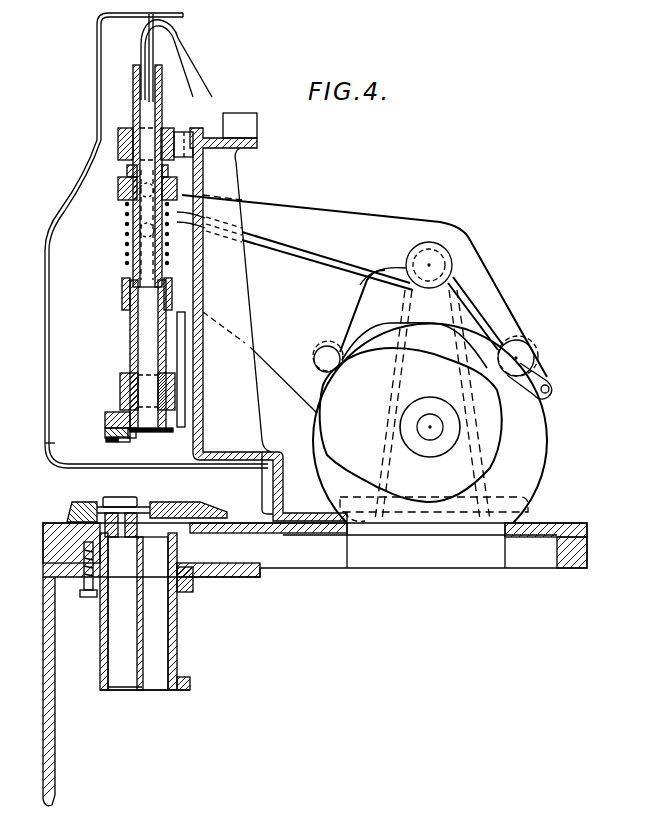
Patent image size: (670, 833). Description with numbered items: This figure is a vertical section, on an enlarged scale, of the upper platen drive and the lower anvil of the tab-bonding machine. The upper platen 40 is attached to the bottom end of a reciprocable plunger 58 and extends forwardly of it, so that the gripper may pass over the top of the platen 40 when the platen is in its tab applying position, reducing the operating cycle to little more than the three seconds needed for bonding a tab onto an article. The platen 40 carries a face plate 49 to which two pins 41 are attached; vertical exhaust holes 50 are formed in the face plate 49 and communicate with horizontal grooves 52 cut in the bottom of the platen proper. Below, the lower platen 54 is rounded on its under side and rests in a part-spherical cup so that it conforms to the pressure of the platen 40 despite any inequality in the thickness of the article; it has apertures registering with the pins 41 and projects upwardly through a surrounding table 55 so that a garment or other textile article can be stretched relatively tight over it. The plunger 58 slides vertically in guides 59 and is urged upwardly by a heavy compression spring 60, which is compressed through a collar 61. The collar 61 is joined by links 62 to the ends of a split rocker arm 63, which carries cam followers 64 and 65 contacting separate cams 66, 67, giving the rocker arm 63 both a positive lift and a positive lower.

The platen 40 is at (118, 413).
The pins 41 is at (132, 438).
The face plate 49 is at (110, 438).
The vertical exhaust holes 50 is at (122, 440).
The horizontal grooves 52 is at (107, 428).
The lower platen 54 is at (122, 500).
The table 55 is at (90, 502).
The reciprocable plunger 58 is at (130, 347).
The guides 59 is at (118, 152).
The heavy compression spring 60 is at (127, 220).
The collar 61 is at (118, 188).
The links 62 is at (127, 202).
The split rocker arm 63 is at (318, 222).
The cam follower 64 is at (325, 358).
The cam follower 65 is at (522, 353).
The cam 66 is at (340, 415).
The cam 67 is at (528, 435).